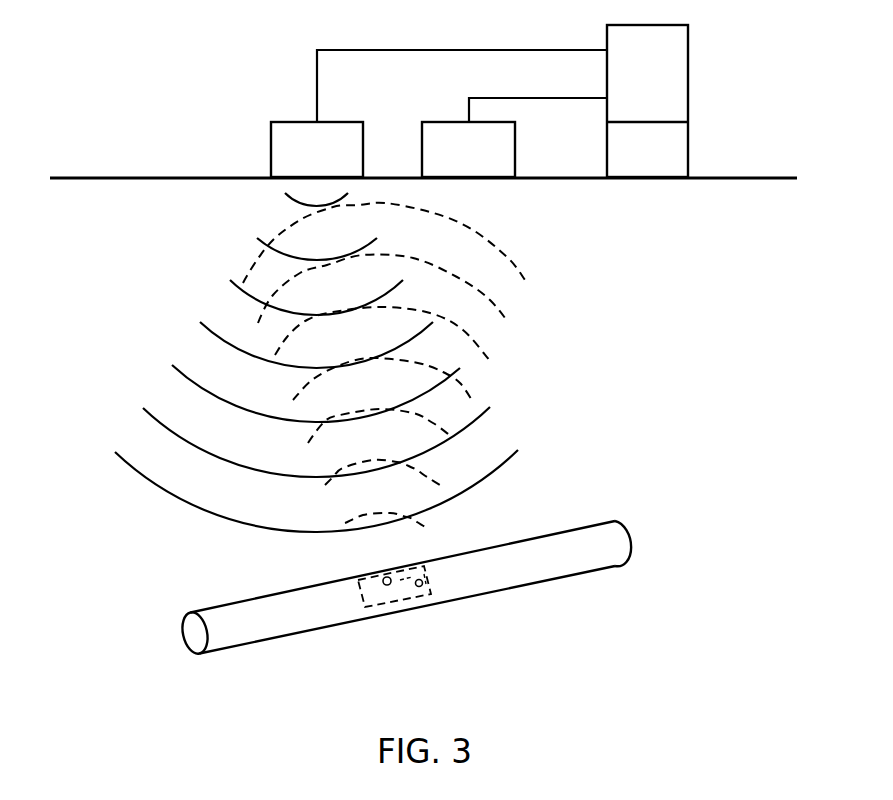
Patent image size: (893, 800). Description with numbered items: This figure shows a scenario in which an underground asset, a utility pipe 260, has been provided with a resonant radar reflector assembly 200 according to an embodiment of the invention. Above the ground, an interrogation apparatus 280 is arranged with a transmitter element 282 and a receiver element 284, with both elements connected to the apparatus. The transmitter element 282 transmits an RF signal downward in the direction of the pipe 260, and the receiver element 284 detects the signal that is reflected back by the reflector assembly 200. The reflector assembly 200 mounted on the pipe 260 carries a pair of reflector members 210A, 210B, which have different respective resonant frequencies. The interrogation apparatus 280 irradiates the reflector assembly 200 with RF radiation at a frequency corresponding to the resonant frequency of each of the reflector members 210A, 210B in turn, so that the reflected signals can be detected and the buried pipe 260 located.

The reflector assembly 200 is at (395, 605).
The reflector member 210A is at (428, 588).
The reflector member 210B is at (383, 588).
The utility pipe 260 is at (600, 560).
The interrogation apparatus 280 is at (688, 50).
The transmitter element 282 is at (287, 122).
The receiver element 284 is at (433, 122).